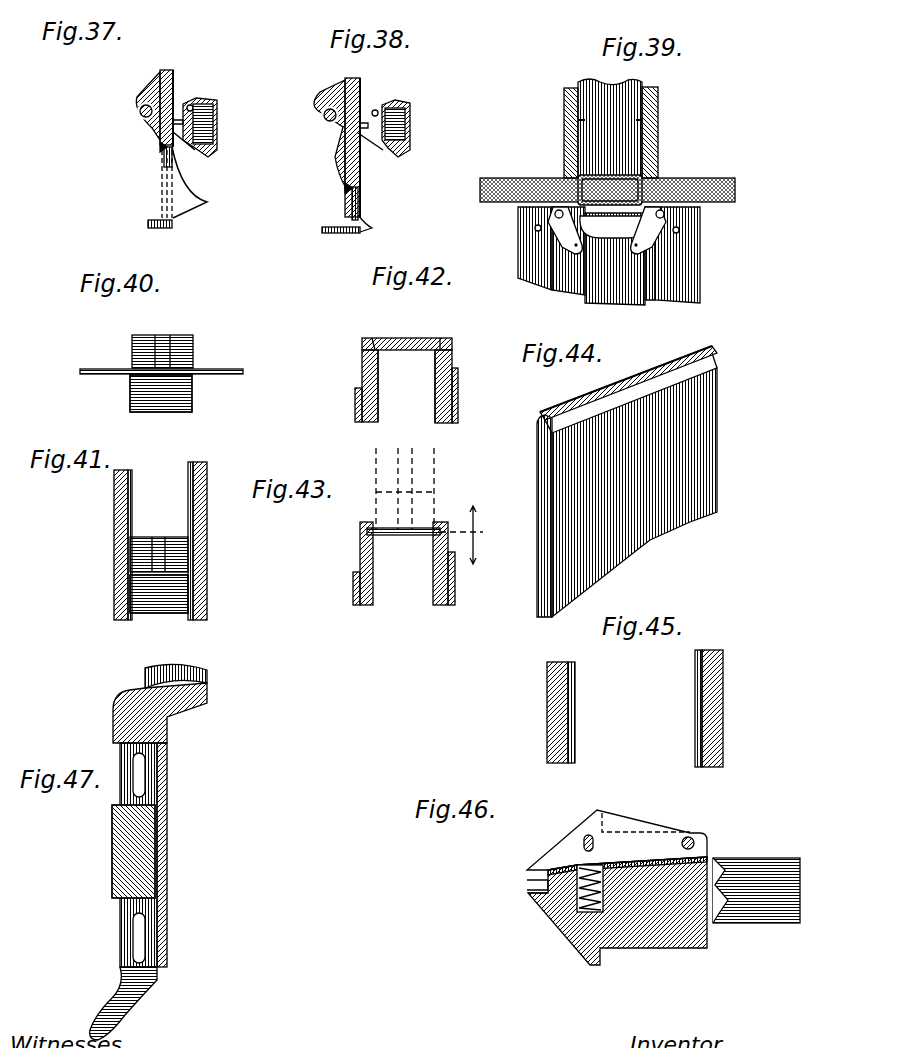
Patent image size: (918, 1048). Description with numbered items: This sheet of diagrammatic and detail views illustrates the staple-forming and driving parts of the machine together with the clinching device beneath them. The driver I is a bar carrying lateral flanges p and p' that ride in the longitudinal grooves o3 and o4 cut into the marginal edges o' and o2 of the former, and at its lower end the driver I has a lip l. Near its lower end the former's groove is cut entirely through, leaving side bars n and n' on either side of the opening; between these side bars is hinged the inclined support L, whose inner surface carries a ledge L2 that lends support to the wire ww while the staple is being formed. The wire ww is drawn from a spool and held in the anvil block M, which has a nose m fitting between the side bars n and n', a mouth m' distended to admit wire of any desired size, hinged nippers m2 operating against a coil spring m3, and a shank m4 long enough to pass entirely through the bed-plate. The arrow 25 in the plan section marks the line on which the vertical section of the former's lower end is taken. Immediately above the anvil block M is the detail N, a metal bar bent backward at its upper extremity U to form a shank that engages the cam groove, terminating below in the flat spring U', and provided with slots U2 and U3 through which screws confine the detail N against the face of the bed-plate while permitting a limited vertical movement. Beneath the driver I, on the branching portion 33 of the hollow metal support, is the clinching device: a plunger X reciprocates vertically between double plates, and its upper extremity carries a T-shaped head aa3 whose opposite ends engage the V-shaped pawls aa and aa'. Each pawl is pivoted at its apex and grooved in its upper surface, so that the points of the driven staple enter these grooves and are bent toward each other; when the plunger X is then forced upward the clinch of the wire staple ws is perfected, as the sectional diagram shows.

In FIG. 37, the driver I is at (174, 80).
In FIG. 38, the driver I is at (358, 170).
In FIG. 39, the driver I is at (610, 128).
In FIG. 42, the driver I is at (405, 338).
In FIG. 43, the driver I is at (425, 491).
In FIG. 44, the driver I is at (638, 466).
In FIG. 37, the hinged nippers m2 is at (195, 102).
In FIG. 38, the hinged nippers m2 is at (372, 128).
In FIG. 40, the hinged nippers m2 is at (163, 310).
In FIG. 41, the hinged nippers m2 is at (167, 519).
In FIG. 46, the hinged nippers m2 is at (640, 812).
In FIG. 37, the nose m is at (223, 112).
In FIG. 38, the nose m is at (420, 112).
In FIG. 40, the nose m is at (145, 393).
In FIG. 41, the nose m is at (159, 605).
In FIG. 46, the nose m is at (522, 913).
In FIG. 37, the anvil block M is at (195, 127).
In FIG. 38, the anvil block M is at (387, 128).
In FIG. 40, the anvil block M is at (171, 393).
In FIG. 41, the anvil block M is at (142, 613).
In FIG. 46, the anvil block M is at (645, 948).
In FIG. 37, the mouth m' is at (142, 129).
In FIG. 38, the mouth m' is at (331, 131).
In FIG. 40, the mouth m' is at (176, 351).
In FIG. 41, the mouth m' is at (184, 554).
In FIG. 46, the mouth m' is at (523, 878).
In FIG. 46, the coil spring m3 is at (585, 912).
In FIG. 46, the shank m4 is at (756, 890).
In FIG. 37, the wire ww is at (160, 144).
In FIG. 38, the wire ww is at (345, 190).
In FIG. 40, the wire ww is at (100, 369).
In FIG. 37, the inclined support L is at (195, 202).
In FIG. 38, the inclined support L is at (370, 227).
In FIG. 37, the ledge L2 is at (150, 143).
In FIG. 38, the ledge L2 is at (336, 157).
In FIG. 37, the lip l is at (176, 150).
In FIG. 38, the lip l is at (358, 195).
In FIG. 44, the lip l is at (712, 350).
In FIG. 39, the marginal edge o' is at (559, 133).
In FIG. 41, the marginal edge o' is at (109, 545).
In FIG. 42, the marginal edge o' is at (361, 370).
In FIG. 43, the marginal edge o' is at (362, 552).
In FIG. 45, the marginal edge o' is at (543, 712).
In FIG. 39, the marginal edge o2 is at (658, 118).
In FIG. 41, the marginal edge o2 is at (207, 590).
In FIG. 42, the marginal edge o2 is at (452, 340).
In FIG. 43, the marginal edge o2 is at (442, 522).
In FIG. 45, the marginal edge o2 is at (723, 712).
In FIG. 41, the longitudinal groove o3 is at (132, 505).
In FIG. 42, the longitudinal groove o3 is at (362, 350).
In FIG. 45, the longitudinal groove o3 is at (575, 740).
In FIG. 41, the longitudinal groove o4 is at (188, 500).
In FIG. 42, the longitudinal groove o4 is at (452, 350).
In FIG. 45, the longitudinal groove o4 is at (695, 740).
In FIG. 39, the lateral flange p is at (591, 112).
In FIG. 42, the lateral flange p is at (374, 331).
In FIG. 44, the lateral flange p is at (528, 438).
In FIG. 39, the lateral flange p' is at (629, 112).
In FIG. 42, the lateral flange p' is at (446, 329).
In FIG. 44, the lateral flange p' is at (733, 364).
In FIG. 39, the wire staple ws is at (540, 186).
In FIG. 39, the V-shaped pawl aa is at (681, 230).
In FIG. 39, the V-shaped pawl aa' is at (530, 230).
In FIG. 39, the T-shaped head aa3 is at (613, 227).
In FIG. 39, the branching portion of hollow metal support 33 is at (718, 273).
In FIG. 39, the plunger X is at (620, 280).
In FIG. 42, the side bar n is at (466, 395).
In FIG. 43, the side bar n is at (462, 578).
In FIG. 42, the side bar n' is at (341, 400).
In FIG. 43, the side bar n' is at (338, 585).
In FIG. 43, the motion arrow 25 is at (483, 532).
In FIG. 47, the upper extremity of detail U is at (177, 815).
In FIG. 47, the slot U2 is at (142, 940).
In FIG. 47, the slot U3 is at (140, 776).
In FIG. 47, the flat spring U' is at (113, 1003).
In FIG. 47, the detail N is at (120, 850).